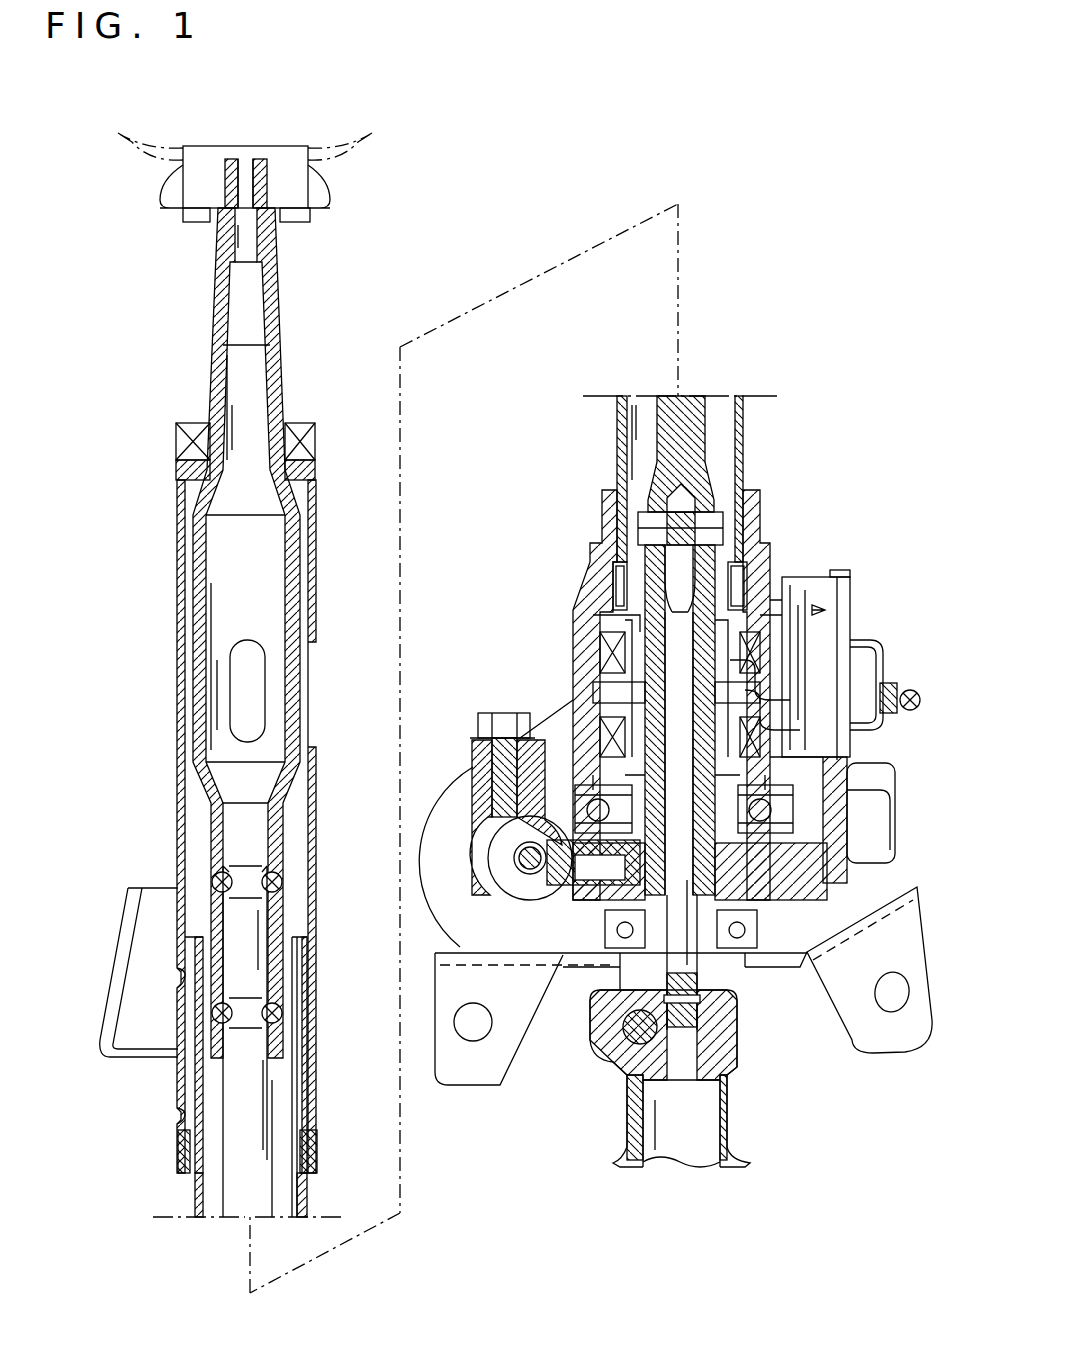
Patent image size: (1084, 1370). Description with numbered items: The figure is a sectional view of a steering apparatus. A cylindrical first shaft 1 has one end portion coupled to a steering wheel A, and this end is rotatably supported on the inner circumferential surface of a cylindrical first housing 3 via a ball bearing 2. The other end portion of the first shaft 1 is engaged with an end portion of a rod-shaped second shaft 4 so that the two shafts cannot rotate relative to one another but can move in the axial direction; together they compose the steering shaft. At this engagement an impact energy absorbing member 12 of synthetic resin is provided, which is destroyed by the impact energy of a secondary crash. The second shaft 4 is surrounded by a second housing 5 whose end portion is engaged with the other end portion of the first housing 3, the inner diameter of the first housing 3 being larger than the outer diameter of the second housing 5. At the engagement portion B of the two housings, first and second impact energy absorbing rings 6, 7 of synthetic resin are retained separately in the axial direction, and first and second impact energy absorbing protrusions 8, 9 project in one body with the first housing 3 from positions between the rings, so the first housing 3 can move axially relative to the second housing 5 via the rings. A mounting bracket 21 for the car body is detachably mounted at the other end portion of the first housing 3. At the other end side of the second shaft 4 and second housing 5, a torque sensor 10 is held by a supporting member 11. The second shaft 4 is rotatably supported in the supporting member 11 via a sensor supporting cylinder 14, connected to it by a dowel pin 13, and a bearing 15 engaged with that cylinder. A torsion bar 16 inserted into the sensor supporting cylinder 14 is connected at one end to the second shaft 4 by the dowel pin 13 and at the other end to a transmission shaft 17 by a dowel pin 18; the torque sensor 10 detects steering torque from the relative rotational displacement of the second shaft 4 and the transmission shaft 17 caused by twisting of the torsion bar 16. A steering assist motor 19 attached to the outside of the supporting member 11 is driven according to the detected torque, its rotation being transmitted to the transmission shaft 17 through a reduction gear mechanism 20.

The steering wheel A is at (335, 180).
The first shaft 1 is at (280, 367).
The ball bearing 2 is at (195, 423).
The first housing 3 is at (177, 622).
The second shaft 4 is at (265, 1195).
The second housing 5 is at (195, 1200).
The first impact energy absorbing ring 6 is at (307, 948).
The second impact energy absorbing ring 7 is at (305, 1140).
The first impact energy absorbing protrusion 8 is at (178, 978).
The second impact energy absorbing protrusion 9 is at (178, 1115).
The torque sensor 10 is at (597, 646).
The supporting member 11 is at (573, 690).
The impact energy absorbing member 12 is at (222, 880).
The dowel pin 13 is at (735, 548).
The sensor supporting cylinder 14 is at (680, 605).
The bearing 15 is at (620, 575).
The torsion bar 16 is at (830, 565).
The transmission shaft 17 is at (770, 970).
The dowel pin 18 is at (752, 1040).
The steering assist motor 19 is at (458, 790).
The reduction gear mechanism 20 is at (538, 884).
The mounting bracket 21 is at (128, 900).
The engagement portion B is at (325, 1013).